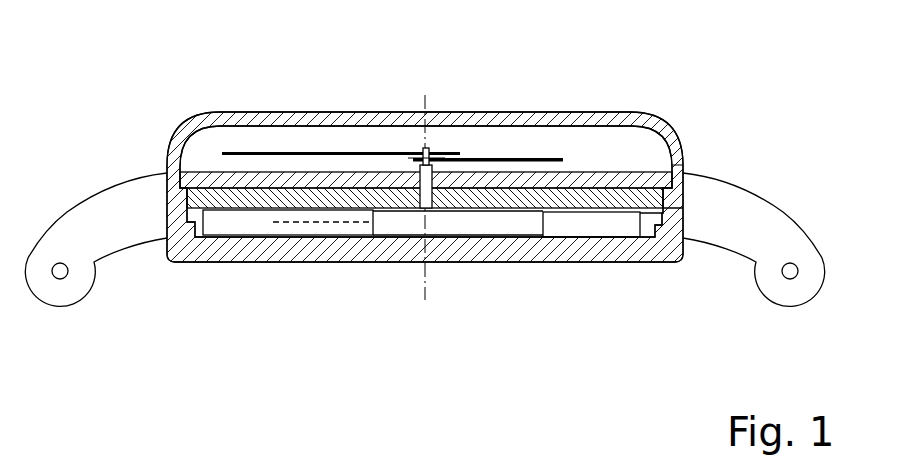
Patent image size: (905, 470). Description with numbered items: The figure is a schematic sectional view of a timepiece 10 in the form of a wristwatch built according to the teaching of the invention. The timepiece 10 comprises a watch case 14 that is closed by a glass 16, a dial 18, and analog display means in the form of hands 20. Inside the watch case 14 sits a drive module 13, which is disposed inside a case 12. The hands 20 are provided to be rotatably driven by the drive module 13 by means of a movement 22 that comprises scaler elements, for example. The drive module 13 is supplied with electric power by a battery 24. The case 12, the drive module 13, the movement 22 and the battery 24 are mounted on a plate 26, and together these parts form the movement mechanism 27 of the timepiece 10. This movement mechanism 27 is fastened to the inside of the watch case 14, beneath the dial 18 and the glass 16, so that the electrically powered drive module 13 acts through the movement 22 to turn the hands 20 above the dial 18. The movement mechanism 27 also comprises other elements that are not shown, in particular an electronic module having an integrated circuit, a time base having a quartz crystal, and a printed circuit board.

The timepiece 10 is at (230, 67).
The case 12 is at (290, 237).
The drive module 13 is at (353, 222).
The watch case 14 is at (171, 264).
The glass 16 is at (664, 121).
The dial 18 is at (577, 172).
The hands 20 is at (402, 147).
The movement 22 is at (480, 222).
The battery 24 is at (585, 222).
The plate 26 is at (623, 197).
The movement mechanism 27 is at (686, 208).